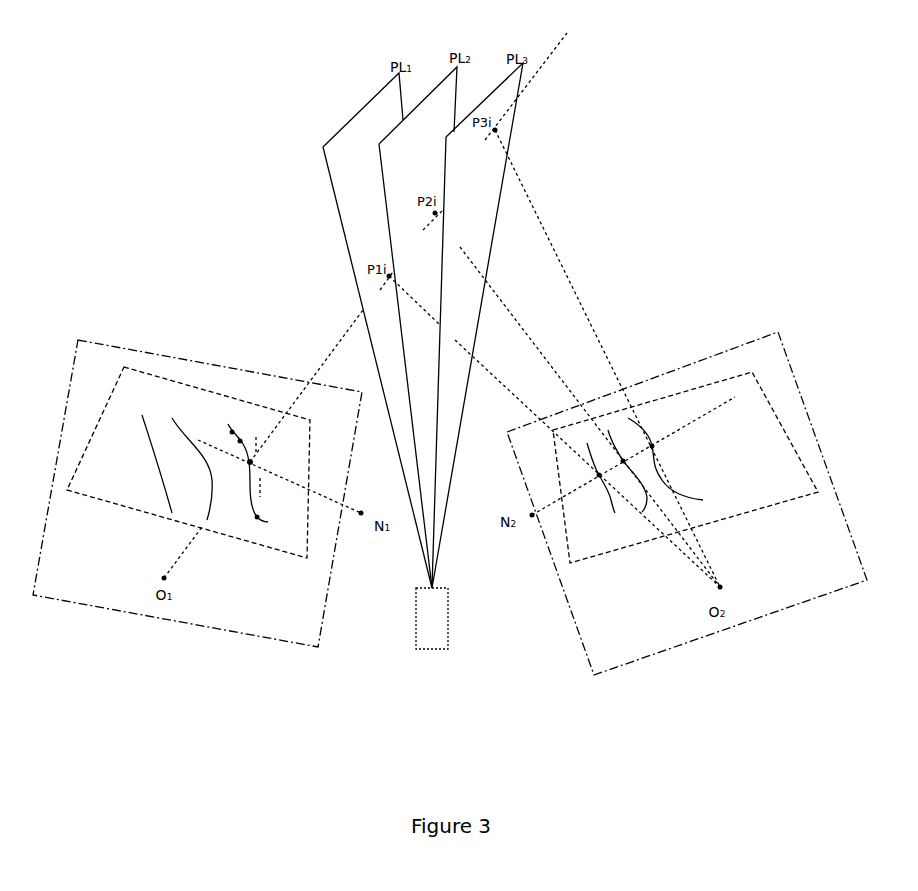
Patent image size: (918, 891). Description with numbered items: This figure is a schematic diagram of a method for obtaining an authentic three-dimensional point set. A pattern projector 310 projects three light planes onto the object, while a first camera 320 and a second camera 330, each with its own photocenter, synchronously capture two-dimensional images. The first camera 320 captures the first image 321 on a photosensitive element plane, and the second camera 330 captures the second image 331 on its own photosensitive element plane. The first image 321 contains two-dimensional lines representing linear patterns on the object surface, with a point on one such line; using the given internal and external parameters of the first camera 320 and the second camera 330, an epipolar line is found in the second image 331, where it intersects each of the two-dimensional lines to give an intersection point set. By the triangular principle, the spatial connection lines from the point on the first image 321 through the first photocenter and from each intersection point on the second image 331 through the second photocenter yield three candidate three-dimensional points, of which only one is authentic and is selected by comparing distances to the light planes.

The pattern projector 310 is at (430, 653).
The first camera 320 is at (198, 628).
The first image 321 is at (148, 390).
The second camera 330 is at (685, 642).
The second image 331 is at (728, 390).